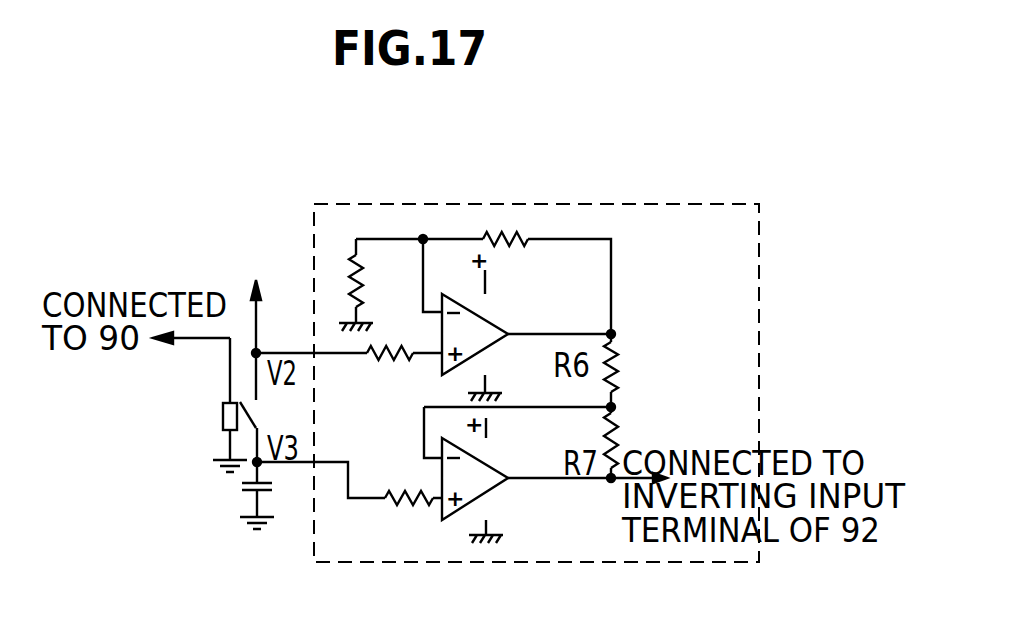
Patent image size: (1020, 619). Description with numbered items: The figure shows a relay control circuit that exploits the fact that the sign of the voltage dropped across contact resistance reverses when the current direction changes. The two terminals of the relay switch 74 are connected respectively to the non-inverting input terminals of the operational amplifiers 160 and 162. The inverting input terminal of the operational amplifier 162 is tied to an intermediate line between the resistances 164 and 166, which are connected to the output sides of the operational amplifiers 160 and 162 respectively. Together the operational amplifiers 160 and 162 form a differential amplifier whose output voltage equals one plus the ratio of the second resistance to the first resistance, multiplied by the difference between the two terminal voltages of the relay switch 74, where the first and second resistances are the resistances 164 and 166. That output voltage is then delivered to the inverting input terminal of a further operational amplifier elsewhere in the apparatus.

The relay switch 74 is at (250, 406).
The operational amplifier 160 is at (492, 325).
The operational amplifier 162 is at (491, 461).
The resistance 164 is at (619, 353).
The resistance 166 is at (619, 418).